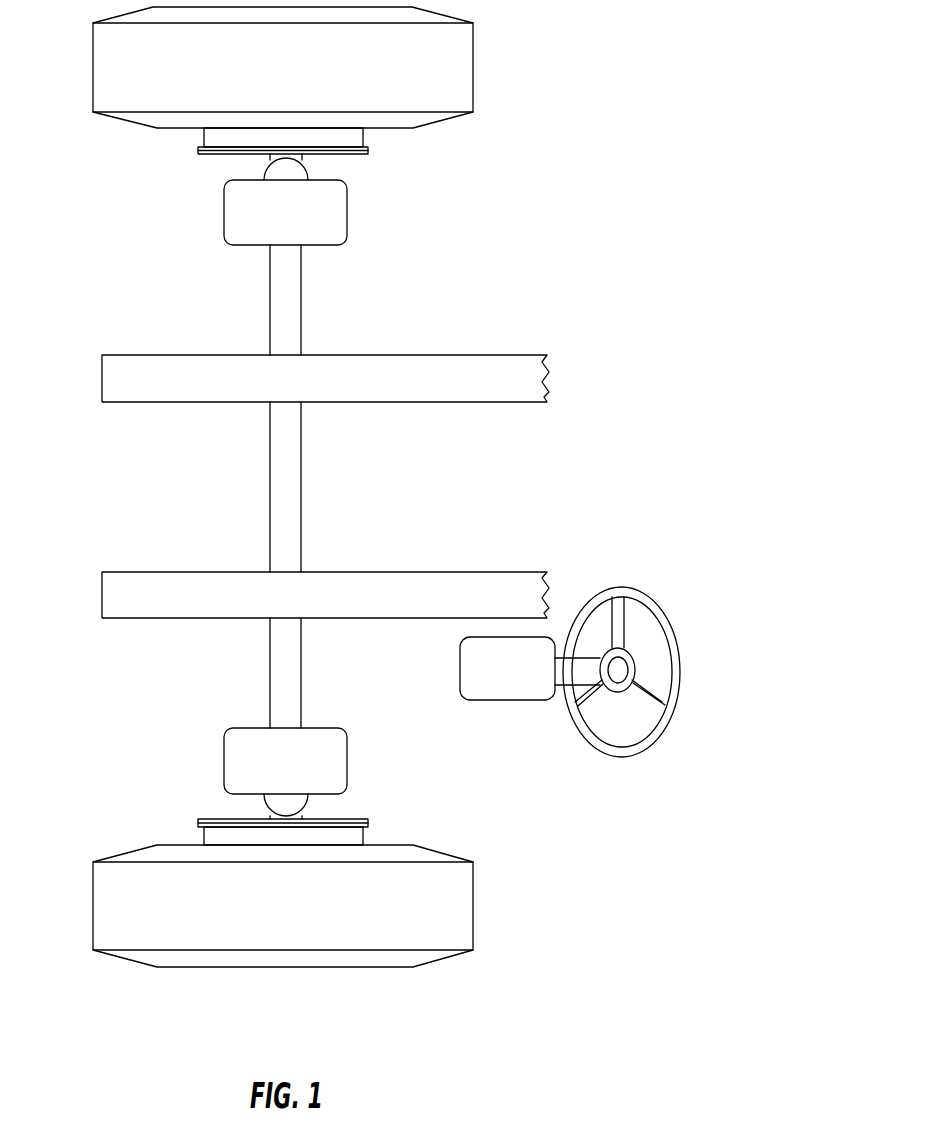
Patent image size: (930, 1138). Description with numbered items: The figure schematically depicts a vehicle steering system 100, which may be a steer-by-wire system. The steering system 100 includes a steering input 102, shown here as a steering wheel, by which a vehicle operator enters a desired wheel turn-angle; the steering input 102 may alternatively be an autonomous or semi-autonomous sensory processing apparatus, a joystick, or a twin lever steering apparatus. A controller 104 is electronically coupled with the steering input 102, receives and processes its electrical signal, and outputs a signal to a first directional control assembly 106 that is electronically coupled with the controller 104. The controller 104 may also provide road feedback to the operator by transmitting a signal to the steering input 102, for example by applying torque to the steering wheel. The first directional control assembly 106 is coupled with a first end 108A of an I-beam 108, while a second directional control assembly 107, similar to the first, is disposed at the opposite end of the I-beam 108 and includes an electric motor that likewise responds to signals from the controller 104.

The steering system 100 is at (421, 487).
The steering input 102 is at (673, 645).
The controller 104 is at (510, 693).
The first directional control assembly 106 is at (243, 767).
The second directional control assembly 107 is at (240, 220).
The I-beam 108 is at (282, 508).
The first end of the I-beam 108A is at (375, 172).